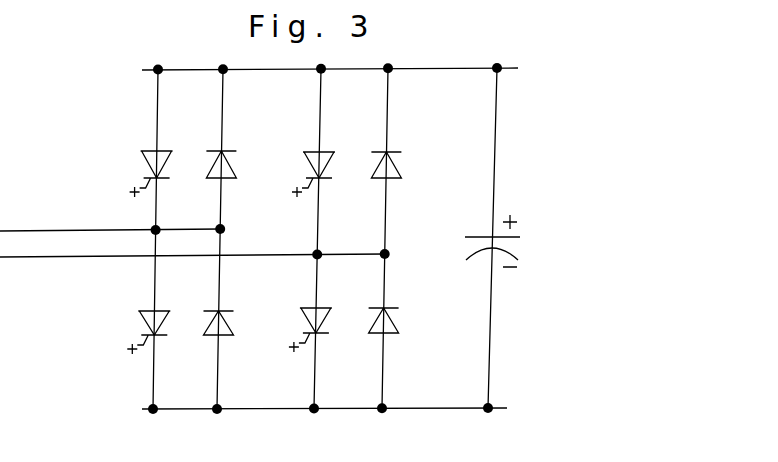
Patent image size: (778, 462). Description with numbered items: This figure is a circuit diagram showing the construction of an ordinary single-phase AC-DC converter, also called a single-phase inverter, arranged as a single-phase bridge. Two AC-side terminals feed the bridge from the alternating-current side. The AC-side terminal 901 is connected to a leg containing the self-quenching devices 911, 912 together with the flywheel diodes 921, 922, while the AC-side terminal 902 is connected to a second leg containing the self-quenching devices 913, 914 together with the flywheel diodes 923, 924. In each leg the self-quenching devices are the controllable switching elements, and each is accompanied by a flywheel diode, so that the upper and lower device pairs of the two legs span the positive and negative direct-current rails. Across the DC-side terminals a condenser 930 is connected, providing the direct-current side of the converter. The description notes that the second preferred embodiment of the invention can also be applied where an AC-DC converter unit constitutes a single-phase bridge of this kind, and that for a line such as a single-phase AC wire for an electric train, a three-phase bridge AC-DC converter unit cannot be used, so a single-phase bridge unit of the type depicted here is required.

The AC-side terminal 901 is at (50, 230).
The AC-side terminal 902 is at (48, 258).
The self-quenching device 911 is at (170, 147).
The self-quenching device 912 is at (162, 336).
The self-quenching device 913 is at (327, 148).
The self-quenching device 914 is at (321, 334).
The flywheel diode 921 is at (236, 148).
The flywheel diode 922 is at (227, 336).
The flywheel diode 923 is at (403, 148).
The flywheel diode 924 is at (390, 334).
The condenser 930 is at (520, 232).